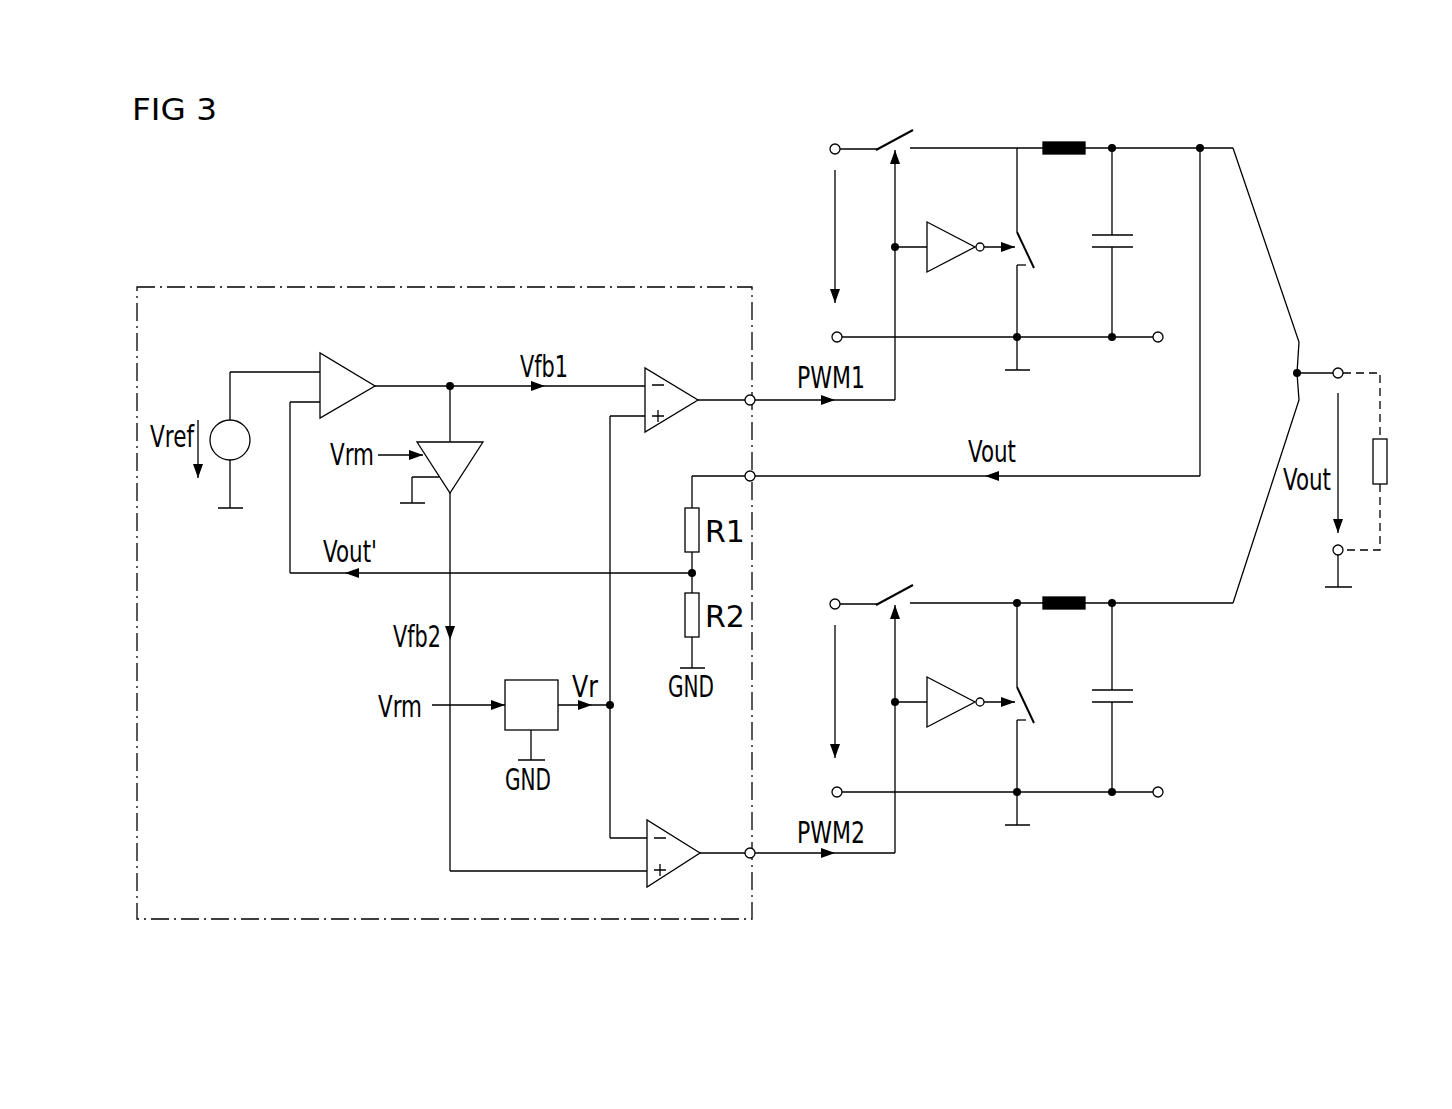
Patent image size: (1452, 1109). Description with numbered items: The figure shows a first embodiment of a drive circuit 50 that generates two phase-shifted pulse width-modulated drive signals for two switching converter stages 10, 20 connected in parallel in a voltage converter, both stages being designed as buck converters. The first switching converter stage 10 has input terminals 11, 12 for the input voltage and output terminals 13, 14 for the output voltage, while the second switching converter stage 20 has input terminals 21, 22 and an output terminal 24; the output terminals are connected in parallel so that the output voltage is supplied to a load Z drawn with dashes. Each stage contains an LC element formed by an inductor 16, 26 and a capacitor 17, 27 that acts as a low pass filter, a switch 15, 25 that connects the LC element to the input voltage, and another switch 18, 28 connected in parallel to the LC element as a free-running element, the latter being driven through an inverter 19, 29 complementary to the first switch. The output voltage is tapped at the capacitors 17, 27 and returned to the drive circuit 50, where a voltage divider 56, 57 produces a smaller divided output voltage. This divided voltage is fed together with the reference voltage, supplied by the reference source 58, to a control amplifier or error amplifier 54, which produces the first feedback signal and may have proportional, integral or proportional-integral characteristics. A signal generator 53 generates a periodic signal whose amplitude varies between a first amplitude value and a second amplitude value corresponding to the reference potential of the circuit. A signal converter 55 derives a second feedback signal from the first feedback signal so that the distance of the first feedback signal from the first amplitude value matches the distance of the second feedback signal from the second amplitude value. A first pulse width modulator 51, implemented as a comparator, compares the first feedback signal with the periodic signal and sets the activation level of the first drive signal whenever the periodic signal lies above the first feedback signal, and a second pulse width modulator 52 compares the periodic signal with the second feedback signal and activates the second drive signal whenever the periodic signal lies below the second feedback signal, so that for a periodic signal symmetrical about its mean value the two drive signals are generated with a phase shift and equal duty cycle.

The first switching converter stage 10 is at (1076, 336).
The input terminal 11 is at (838, 143).
The input terminal 12 is at (845, 330).
The output terminal 13 is at (1112, 142).
The output terminal 14 is at (1112, 345).
The switch 15 is at (905, 128).
The inductor 16 is at (1066, 140).
The capacitor 17 is at (1135, 245).
The switch 18 is at (1036, 248).
The inverter 19 is at (950, 225).
The second switching converter stage 20 is at (1032, 705).
The input terminal 21 is at (844, 570).
The input terminal 22 is at (856, 767).
The output terminal 24 is at (1109, 826).
The switch 25 is at (900, 564).
The inductor 26 is at (1064, 569).
The capacitor 27 is at (1145, 689).
The switch 28 is at (1045, 690).
The inverter 29 is at (959, 678).
The drive circuit 50 is at (440, 287).
The first pulse width modulator 51 is at (676, 378).
The second pulse width modulator 52 is at (678, 829).
The signal generator 53 is at (533, 680).
The control amplifier 54 is at (349, 366).
The signal converter 55 is at (469, 471).
The voltage divider 56 is at (685, 530).
The voltage divider 57 is at (685, 615).
The reference voltage source 58 is at (248, 452).
The load Z is at (1387, 463).